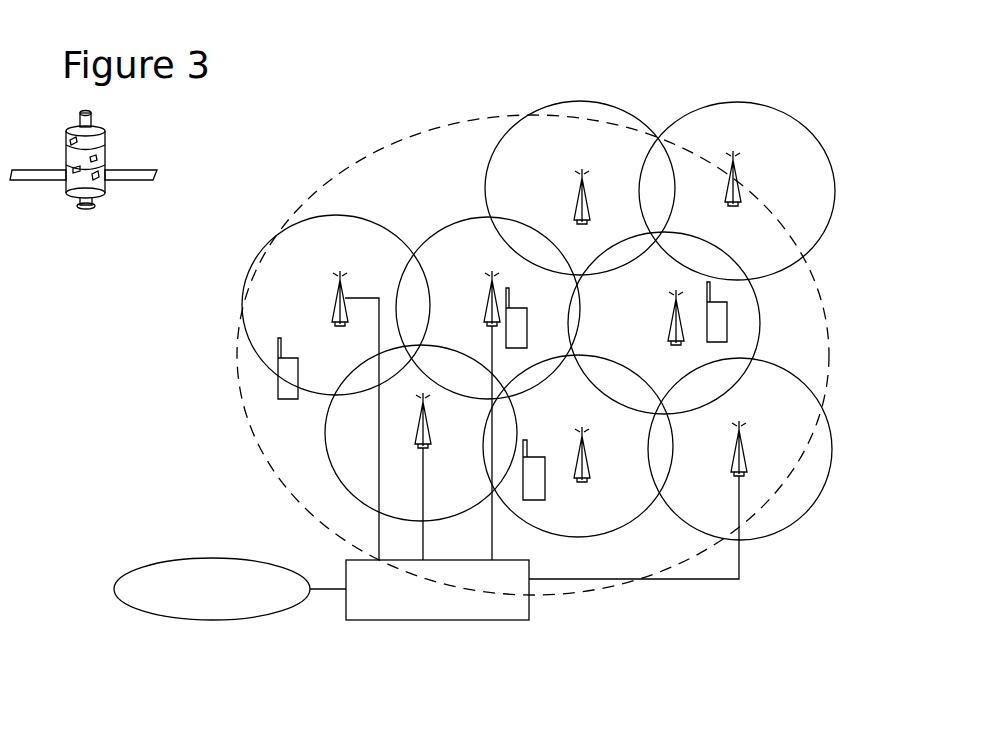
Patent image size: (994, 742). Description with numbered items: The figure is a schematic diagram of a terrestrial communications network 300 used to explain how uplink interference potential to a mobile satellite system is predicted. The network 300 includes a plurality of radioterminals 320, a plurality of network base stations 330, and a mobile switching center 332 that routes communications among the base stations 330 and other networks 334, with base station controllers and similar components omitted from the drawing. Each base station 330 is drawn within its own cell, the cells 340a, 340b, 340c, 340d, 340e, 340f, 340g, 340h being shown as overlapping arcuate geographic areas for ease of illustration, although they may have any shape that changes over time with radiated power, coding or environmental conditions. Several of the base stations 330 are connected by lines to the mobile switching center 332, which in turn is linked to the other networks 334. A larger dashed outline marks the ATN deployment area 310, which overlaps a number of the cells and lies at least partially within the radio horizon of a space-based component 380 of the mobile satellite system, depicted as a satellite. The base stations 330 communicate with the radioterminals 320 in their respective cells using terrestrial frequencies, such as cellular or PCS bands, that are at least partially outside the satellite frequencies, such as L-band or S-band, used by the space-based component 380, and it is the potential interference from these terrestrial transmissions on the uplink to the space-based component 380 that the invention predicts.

The terrestrial communications network 300 is at (425, 87).
The ATN deployment area 310 is at (358, 165).
The radioterminal 320 is at (285, 357).
The network base station 330 is at (333, 312).
The mobile switching center 332 is at (437, 623).
The other networks 334 is at (200, 620).
The cell 340a is at (330, 213).
The cell 340b is at (477, 218).
The cell 340c is at (560, 103).
The cell 340d is at (708, 103).
The cell 340e is at (760, 327).
The cell 340f is at (765, 360).
The cell 340g is at (558, 535).
The cell 340h is at (325, 428).
The space-based component 380 is at (103, 145).